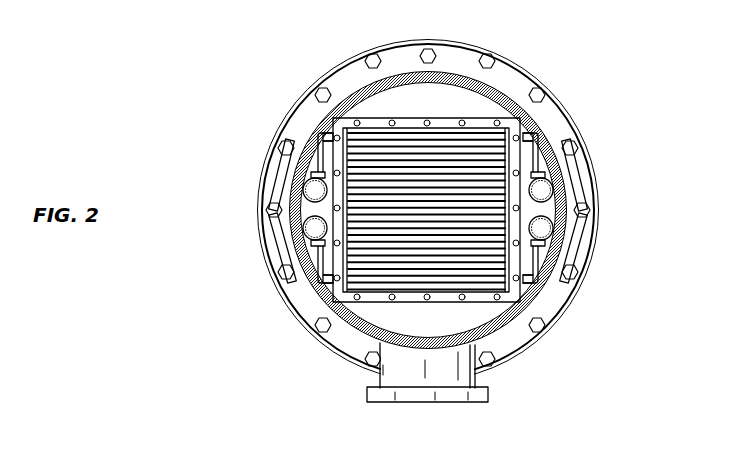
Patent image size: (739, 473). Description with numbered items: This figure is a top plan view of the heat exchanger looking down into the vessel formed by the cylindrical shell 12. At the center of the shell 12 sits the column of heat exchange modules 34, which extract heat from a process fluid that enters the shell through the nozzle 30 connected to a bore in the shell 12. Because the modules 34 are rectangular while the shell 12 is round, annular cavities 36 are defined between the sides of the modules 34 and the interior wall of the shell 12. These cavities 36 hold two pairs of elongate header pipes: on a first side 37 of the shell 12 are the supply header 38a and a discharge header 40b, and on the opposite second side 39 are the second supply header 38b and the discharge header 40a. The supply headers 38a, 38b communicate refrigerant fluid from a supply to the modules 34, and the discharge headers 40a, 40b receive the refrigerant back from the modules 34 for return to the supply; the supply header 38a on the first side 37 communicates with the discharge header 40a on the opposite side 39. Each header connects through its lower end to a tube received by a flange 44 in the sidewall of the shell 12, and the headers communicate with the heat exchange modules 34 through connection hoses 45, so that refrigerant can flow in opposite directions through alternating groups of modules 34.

The cylindrical shell 12 is at (357, 352).
The nozzle 30 is at (472, 367).
The heat exchange modules 34 is at (483, 120).
The annular cavities 36 is at (312, 190).
The first side 37 is at (218, 213).
The supply header 38a is at (284, 276).
The second supply header 38b is at (576, 142).
The opposite side 39 is at (612, 212).
The discharge header 40a is at (573, 277).
The discharge header 40b is at (286, 146).
The flange 44 is at (279, 172).
The connection hoses 45 is at (316, 162).